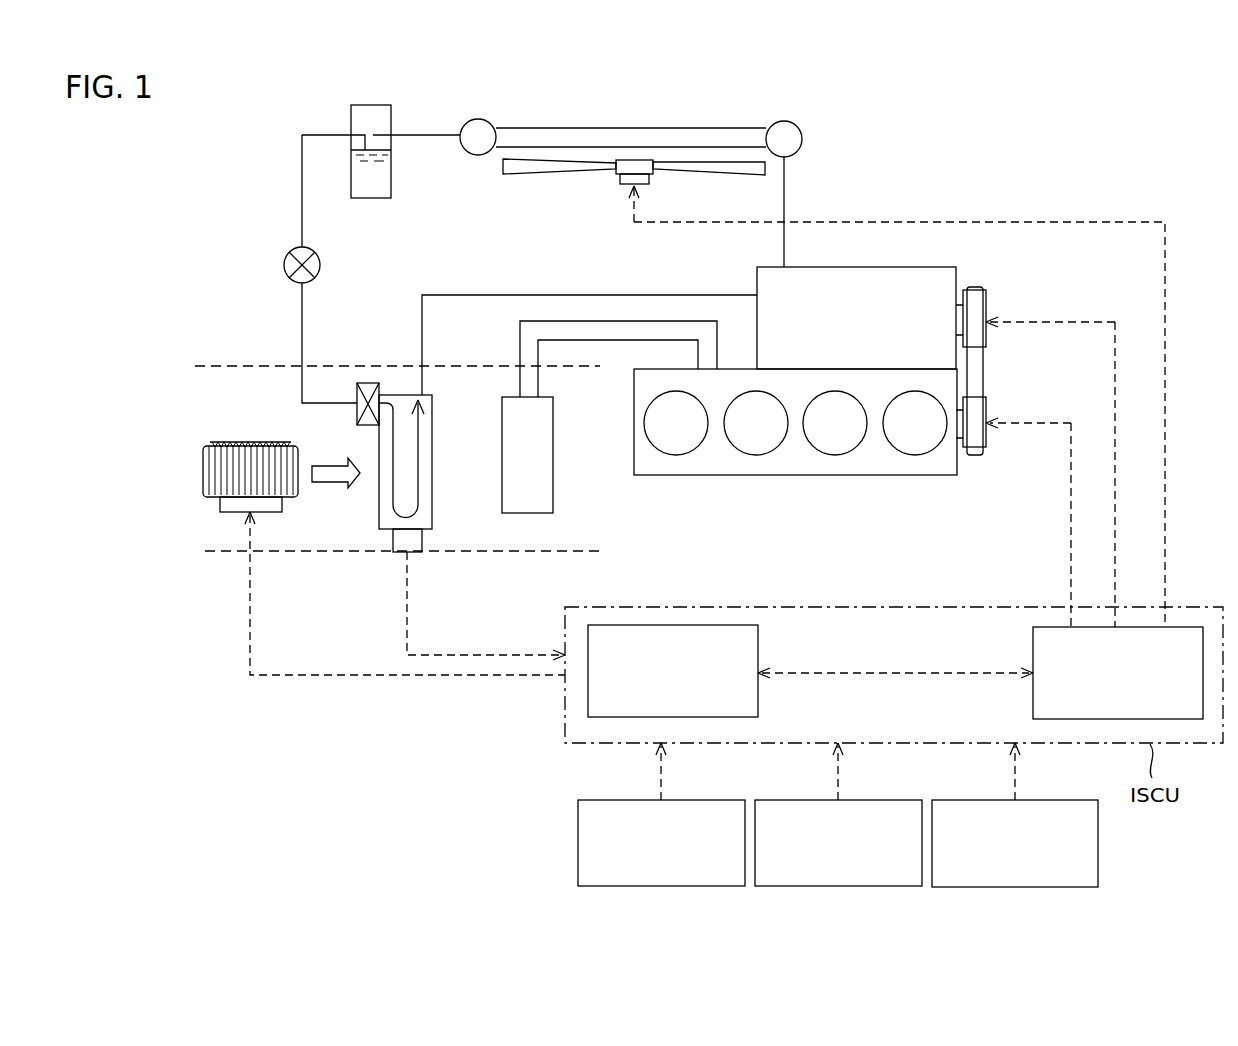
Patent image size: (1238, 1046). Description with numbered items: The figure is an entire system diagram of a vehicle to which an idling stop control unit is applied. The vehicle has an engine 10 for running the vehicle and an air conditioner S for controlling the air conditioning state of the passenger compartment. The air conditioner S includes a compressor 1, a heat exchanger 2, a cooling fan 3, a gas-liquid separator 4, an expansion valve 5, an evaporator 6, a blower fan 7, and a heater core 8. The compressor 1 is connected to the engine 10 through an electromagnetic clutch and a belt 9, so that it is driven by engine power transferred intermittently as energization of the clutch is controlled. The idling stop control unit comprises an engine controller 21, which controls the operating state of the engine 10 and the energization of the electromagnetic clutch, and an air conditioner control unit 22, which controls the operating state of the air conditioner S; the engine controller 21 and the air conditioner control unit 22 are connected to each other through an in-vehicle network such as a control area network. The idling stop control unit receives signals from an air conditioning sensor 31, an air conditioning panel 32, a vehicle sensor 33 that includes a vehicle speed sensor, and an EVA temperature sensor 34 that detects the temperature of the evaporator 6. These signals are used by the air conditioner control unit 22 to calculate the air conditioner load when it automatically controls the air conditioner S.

The air conditioner S is at (266, 147).
The compressor 1 is at (757, 280).
The heat exchanger 2 is at (684, 128).
The cooling fan 3 is at (546, 174).
The gas-liquid separator 4 is at (391, 110).
The expansion valve 5 is at (284, 265).
The evaporator 6 is at (397, 395).
The blower fan 7 is at (245, 442).
The heater core 8 is at (553, 461).
The belt 9 is at (986, 369).
The engine 10 is at (857, 476).
The engine controller 21 is at (1033, 649).
The air conditioner control unit 22 is at (758, 641).
The air conditioning sensor 31 is at (698, 800).
The air conditioning panel 32 is at (878, 800).
The vehicle sensor 33 is at (1058, 800).
The EVA temperature sensor 34 is at (410, 540).